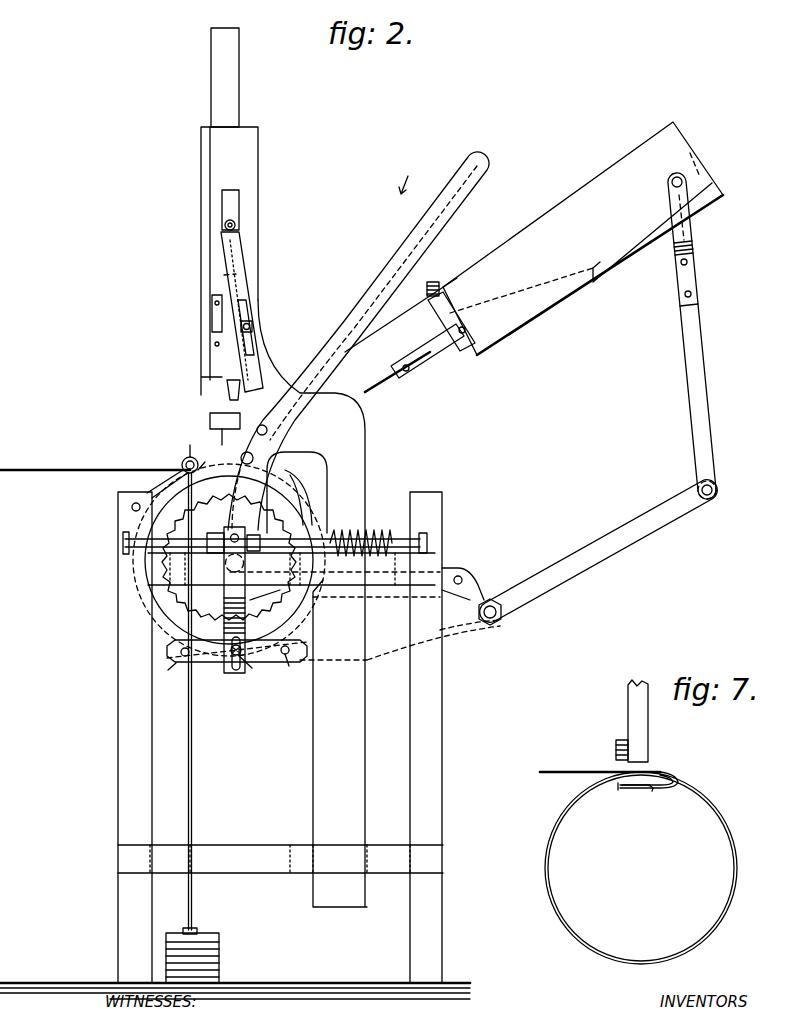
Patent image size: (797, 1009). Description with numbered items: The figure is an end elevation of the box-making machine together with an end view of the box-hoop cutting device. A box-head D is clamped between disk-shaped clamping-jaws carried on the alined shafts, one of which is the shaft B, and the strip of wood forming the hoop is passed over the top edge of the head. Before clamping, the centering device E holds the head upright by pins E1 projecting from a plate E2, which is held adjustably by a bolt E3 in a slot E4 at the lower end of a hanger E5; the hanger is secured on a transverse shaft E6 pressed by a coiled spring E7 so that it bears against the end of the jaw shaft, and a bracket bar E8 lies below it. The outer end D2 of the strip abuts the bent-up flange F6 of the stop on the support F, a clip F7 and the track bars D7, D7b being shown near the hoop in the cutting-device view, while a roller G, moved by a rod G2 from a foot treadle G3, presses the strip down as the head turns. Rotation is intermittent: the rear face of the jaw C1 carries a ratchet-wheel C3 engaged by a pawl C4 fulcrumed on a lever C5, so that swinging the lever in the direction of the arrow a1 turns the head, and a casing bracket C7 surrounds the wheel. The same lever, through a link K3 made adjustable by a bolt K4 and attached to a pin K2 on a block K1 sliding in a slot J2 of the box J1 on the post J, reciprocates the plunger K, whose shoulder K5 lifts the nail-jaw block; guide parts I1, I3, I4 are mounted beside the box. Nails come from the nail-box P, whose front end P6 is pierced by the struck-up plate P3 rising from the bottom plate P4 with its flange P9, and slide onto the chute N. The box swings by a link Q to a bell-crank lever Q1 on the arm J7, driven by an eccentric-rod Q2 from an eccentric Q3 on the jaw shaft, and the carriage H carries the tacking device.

In FIG. 2, the plunger K is at (233, 101).
In FIG. 2, the block K1 is at (245, 203).
In FIG. 2, the pin K2 is at (240, 225).
In FIG. 2, the link K3 is at (249, 280).
In FIG. 2, the bolt K4 is at (253, 327).
In FIG. 2, the shoulder K5 is at (228, 392).
In FIG. 2, the post J is at (360, 453).
In FIG. 2, the box J1 is at (210, 233).
In FIG. 2, the slot J2 is at (233, 276).
In FIG. 2, the arm J7 is at (463, 628).
In FIG. 2, the bracket I1 is at (215, 418).
In FIG. 2, the plate I3 is at (214, 328).
In FIG. 2, the pin I4 is at (215, 345).
In FIG. 2, the lever C5 is at (360, 307).
In FIG. 2, the clamping-jaw C1 is at (163, 600).
In FIG. 2, the ratchet-wheel C3 is at (293, 524).
In FIG. 2, the pawl C4 is at (283, 489).
In FIG. 2, the casing bracket C7 is at (160, 478).
In FIG. 2, the arrow a1 is at (413, 178).
In FIG. 2, the chute N is at (372, 386).
In FIG. 2, the nail-box P is at (565, 217).
In FIG. 2, the plate P3 is at (430, 322).
In FIG. 2, the bottom plate P4 is at (428, 358).
In FIG. 2, the front end P6 is at (438, 282).
In FIG. 2, the flange P9 is at (605, 280).
In FIG. 2, the link Q is at (697, 288).
In FIG. 2, the bell-crank lever Q1 is at (598, 552).
In FIG. 2, the eccentric-rod Q2 is at (412, 570).
In FIG. 2, the eccentric Q3 is at (258, 603).
In FIG. 2, the centering device E is at (175, 650).
In FIG. 2, the pins E1 is at (340, 532).
In FIG. 2, the plate E2 is at (174, 672).
In FIG. 2, the bolt E3 is at (253, 669).
In FIG. 2, the slot E4 is at (235, 672).
In FIG. 2, the hanger E5 is at (230, 590).
In FIG. 2, the shaft E6 is at (248, 498).
In FIG. 2, the coiled spring E7 is at (290, 668).
In FIG. 2, the bracket E8 is at (212, 676).
In FIG. 2, the shaft B is at (218, 575).
In FIG. 7, the box-head D is at (548, 850).
In FIG. 7, the end of strip D2 is at (668, 775).
In FIG. 2, the track bar D7 is at (120, 469).
In FIG. 7, the track bar D7b is at (565, 771).
In FIG. 2, the support F is at (200, 462).
In FIG. 7, the bent-up flange F6 is at (690, 786).
In FIG. 7, the clip F7 is at (620, 790).
In FIG. 2, the roller G is at (187, 459).
In FIG. 2, the rod G2 is at (193, 792).
In FIG. 2, the treadle G3 is at (220, 937).
In FIG. 7, the carriage H is at (628, 705).